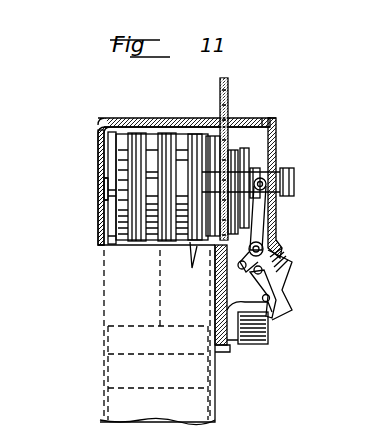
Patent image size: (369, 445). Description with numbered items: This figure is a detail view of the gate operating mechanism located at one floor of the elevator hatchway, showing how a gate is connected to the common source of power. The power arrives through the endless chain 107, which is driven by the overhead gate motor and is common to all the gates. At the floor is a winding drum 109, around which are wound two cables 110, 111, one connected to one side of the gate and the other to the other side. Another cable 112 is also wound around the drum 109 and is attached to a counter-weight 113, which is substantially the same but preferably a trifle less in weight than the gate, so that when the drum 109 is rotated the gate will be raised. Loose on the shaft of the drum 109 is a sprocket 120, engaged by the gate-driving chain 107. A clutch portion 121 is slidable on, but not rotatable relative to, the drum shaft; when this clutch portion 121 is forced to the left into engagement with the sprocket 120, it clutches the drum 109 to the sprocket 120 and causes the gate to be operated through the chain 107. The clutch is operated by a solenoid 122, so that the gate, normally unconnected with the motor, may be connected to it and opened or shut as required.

The endless chain 107 is at (235, 100).
The winding drum 109 is at (203, 134).
The cable 110 is at (128, 152).
The cable 111 is at (192, 182).
The cable 112 is at (140, 213).
The counter-weight 113 is at (206, 390).
The sprocket 120 is at (238, 126).
The clutch portion 121 is at (250, 163).
The solenoid 122 is at (252, 344).